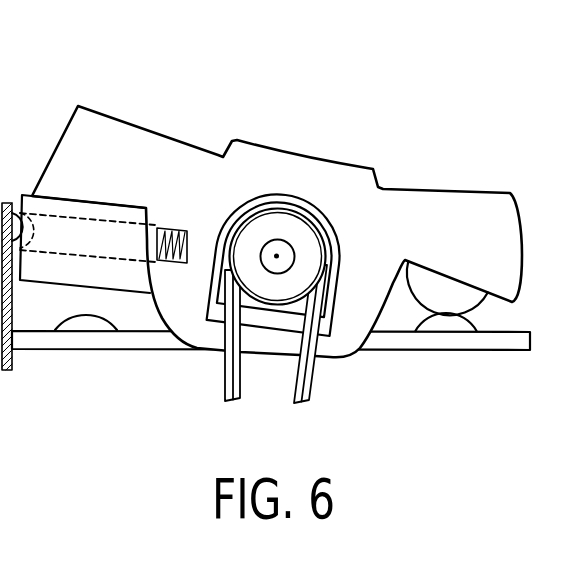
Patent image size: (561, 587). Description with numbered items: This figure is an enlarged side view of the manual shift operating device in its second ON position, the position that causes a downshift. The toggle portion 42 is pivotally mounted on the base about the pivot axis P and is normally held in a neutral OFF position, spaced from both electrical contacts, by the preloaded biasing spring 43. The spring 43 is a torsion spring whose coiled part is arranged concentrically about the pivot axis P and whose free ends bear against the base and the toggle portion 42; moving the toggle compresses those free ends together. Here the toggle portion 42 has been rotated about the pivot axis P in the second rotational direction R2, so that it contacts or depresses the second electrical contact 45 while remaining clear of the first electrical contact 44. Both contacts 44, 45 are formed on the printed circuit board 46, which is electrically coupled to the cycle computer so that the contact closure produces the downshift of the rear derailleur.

The toggle portion 42 is at (167, 136).
The biasing element or spring 43 is at (316, 210).
The first electrical contact 44 is at (93, 322).
The second electrical contact 45 is at (448, 323).
The printed circuit board 46 is at (393, 340).
The pivot axis P is at (276, 256).
The second rotational direction R2 is at (505, 186).